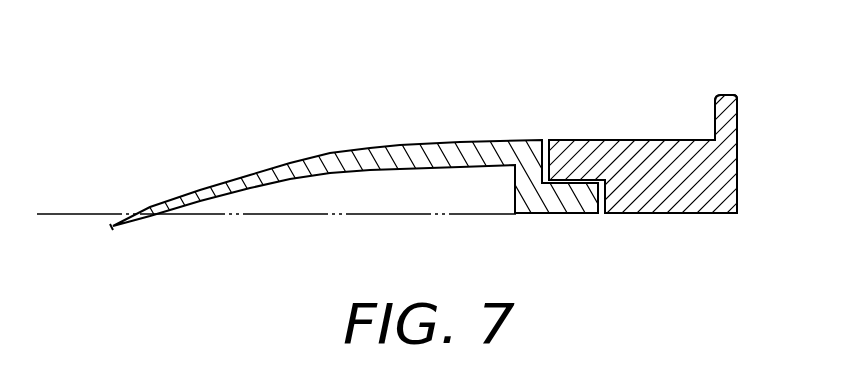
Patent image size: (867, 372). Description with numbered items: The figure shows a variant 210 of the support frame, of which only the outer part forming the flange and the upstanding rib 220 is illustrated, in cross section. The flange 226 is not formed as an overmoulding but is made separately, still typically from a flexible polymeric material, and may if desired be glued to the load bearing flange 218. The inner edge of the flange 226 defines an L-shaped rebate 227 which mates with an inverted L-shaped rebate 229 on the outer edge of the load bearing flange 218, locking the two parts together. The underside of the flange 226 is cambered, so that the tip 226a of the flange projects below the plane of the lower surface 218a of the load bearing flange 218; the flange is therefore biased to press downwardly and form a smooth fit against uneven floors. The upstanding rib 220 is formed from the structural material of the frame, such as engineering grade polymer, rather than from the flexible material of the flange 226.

The variant 210 is at (472, 106).
The load bearing flange 218 is at (677, 205).
The lower surface 218a is at (283, 216).
The upstanding rib 220 is at (730, 110).
The flange 226 is at (330, 160).
The tip 226a is at (115, 229).
The L-shaped rebate 227 is at (545, 183).
The inverted L-shaped rebate 229 is at (553, 156).